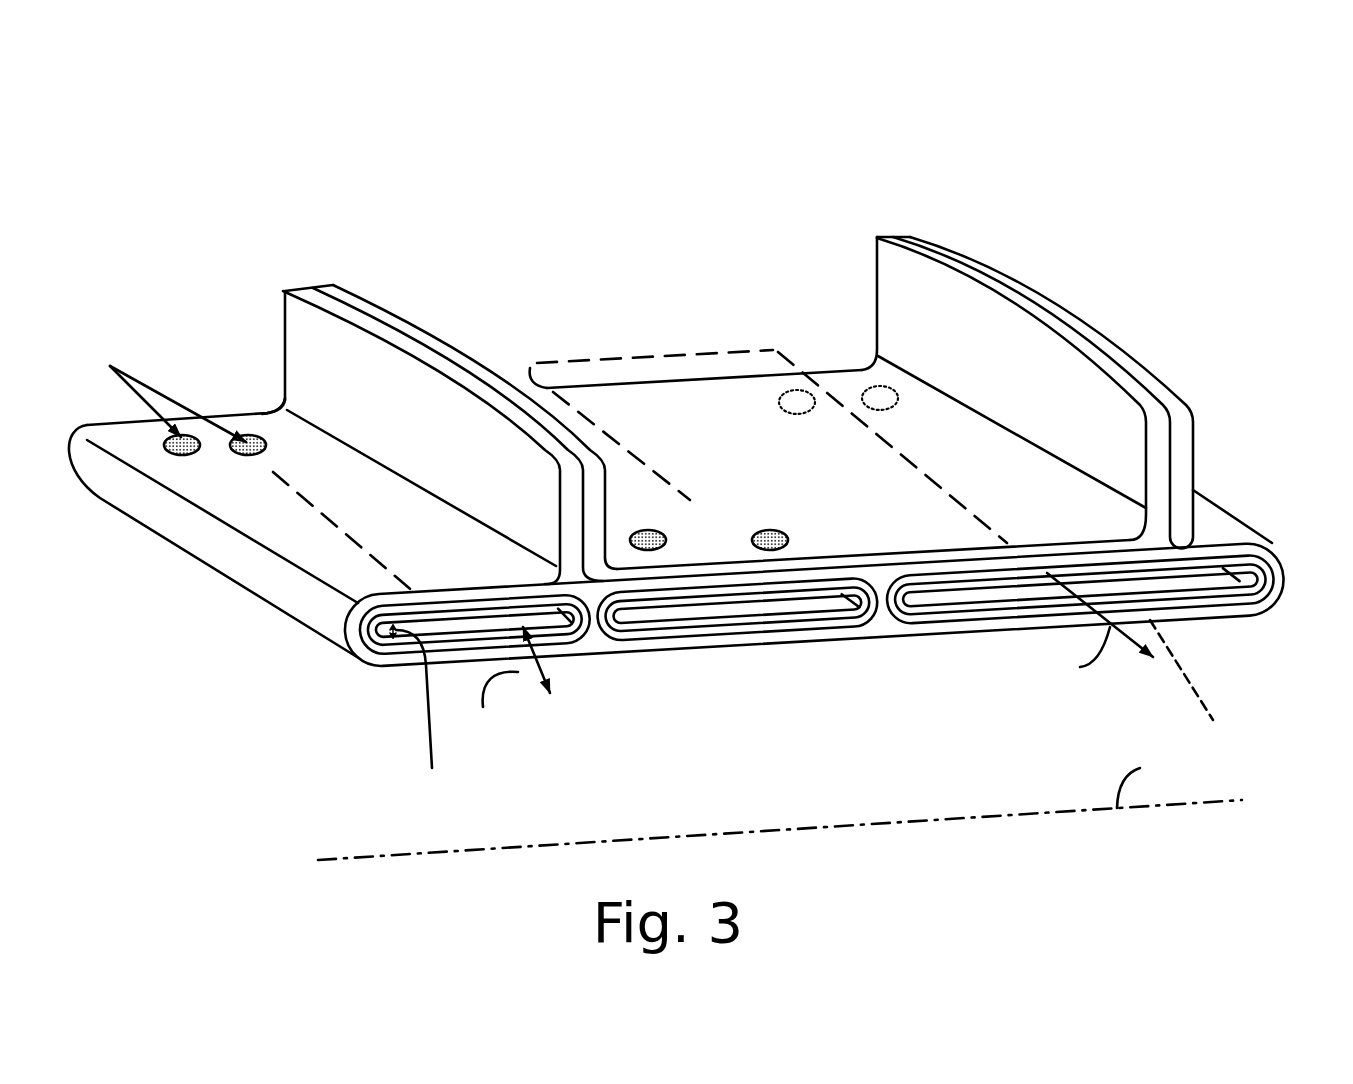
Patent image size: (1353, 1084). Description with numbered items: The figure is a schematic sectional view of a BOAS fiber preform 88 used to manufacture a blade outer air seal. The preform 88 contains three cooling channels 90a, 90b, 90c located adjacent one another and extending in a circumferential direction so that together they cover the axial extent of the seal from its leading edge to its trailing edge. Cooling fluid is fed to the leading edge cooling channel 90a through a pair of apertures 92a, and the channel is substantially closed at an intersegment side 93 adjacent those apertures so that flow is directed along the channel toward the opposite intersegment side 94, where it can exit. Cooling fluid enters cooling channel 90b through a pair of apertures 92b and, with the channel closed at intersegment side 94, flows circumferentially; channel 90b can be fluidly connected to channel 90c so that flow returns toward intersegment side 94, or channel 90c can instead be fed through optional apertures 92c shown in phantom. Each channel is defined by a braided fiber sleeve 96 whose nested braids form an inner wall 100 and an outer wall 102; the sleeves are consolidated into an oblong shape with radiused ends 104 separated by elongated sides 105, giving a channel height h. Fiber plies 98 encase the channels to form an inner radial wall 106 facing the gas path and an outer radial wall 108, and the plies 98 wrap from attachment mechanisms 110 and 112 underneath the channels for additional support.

The fiber preform 88 is at (699, 449).
The leading edge cooling channel 90a is at (524, 630).
The cooling channel 90b is at (760, 603).
The cooling channel 90c is at (943, 590).
The apertures 92a is at (240, 456).
The apertures 92b is at (663, 533).
The optional apertures 92c is at (866, 386).
The intersegment side 93 is at (260, 413).
The intersegment side 94 is at (362, 673).
The braided fiber sleeves 96 is at (1247, 565).
The fiber plies 98 is at (921, 230).
The inner wall 100 is at (1077, 580).
The outer wall 102 is at (1053, 553).
The radiused ends 104 is at (620, 612).
The elongated sides 105 is at (698, 605).
The inner radial wall 106 is at (1204, 682).
The outer radial wall 108 is at (690, 448).
The attachment mechanism 110 is at (433, 342).
The attachment mechanism 112 is at (1010, 275).